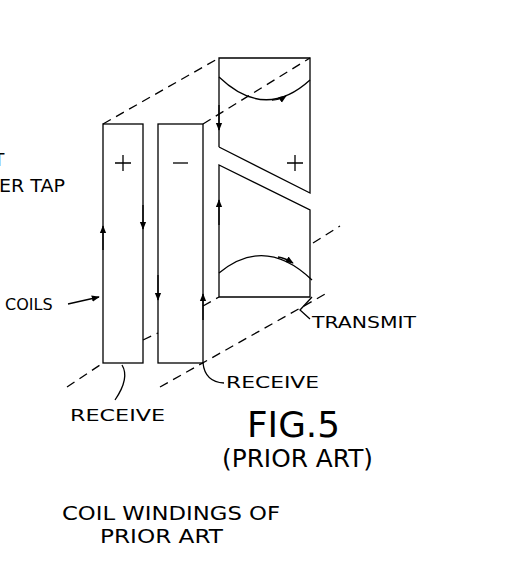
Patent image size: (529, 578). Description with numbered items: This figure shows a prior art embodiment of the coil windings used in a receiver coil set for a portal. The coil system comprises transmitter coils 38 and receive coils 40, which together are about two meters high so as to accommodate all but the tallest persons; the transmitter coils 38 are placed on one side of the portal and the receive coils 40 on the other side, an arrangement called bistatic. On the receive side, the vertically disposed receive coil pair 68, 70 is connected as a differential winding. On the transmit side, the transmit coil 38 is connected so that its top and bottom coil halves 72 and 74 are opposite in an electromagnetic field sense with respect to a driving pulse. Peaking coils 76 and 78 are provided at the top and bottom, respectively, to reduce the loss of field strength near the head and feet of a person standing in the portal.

The transmitter coil 38 is at (304, 206).
The receive coils 40 is at (139, 240).
The receive coil 68 is at (103, 339).
The receive coil 70 is at (203, 326).
The top coil half 72 is at (310, 150).
The bottom coil half 74 is at (310, 222).
The peaking coil 76 is at (310, 73).
The peaking coil 78 is at (282, 298).